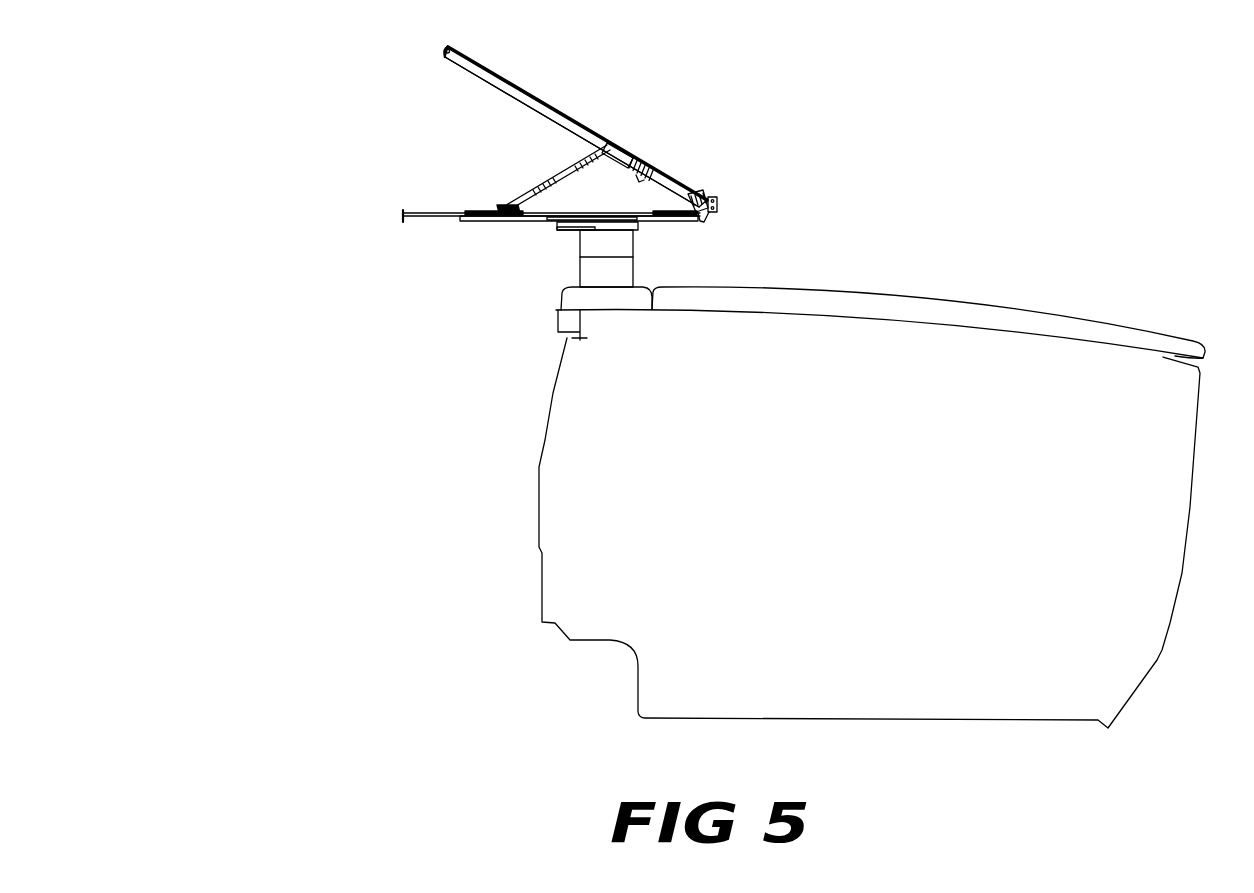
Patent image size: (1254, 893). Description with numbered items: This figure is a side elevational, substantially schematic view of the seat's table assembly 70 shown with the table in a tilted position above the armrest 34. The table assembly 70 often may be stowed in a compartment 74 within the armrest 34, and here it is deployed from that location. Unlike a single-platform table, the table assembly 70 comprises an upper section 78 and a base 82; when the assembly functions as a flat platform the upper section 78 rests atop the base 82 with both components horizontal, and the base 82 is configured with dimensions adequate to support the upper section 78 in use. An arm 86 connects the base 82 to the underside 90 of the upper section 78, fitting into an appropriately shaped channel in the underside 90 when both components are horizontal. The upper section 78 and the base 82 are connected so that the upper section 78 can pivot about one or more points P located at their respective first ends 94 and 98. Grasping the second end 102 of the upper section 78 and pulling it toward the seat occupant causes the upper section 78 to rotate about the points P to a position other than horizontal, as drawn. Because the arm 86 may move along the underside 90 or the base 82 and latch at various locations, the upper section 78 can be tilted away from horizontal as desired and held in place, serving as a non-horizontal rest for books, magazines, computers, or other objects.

The table assembly 70 is at (335, 168).
The upper section 78 is at (468, 50).
The second end 102 is at (445, 51).
The underside 90 is at (496, 86).
The arm 86 is at (558, 178).
The base 82 is at (508, 222).
The first end 94 is at (716, 193).
The pivot point P is at (719, 204).
The first end 98 is at (699, 223).
The armrest 34 is at (822, 290).
The compartment 74 is at (897, 384).